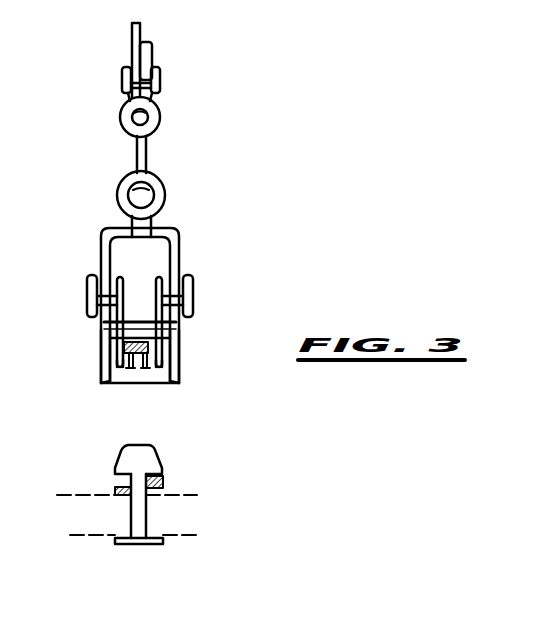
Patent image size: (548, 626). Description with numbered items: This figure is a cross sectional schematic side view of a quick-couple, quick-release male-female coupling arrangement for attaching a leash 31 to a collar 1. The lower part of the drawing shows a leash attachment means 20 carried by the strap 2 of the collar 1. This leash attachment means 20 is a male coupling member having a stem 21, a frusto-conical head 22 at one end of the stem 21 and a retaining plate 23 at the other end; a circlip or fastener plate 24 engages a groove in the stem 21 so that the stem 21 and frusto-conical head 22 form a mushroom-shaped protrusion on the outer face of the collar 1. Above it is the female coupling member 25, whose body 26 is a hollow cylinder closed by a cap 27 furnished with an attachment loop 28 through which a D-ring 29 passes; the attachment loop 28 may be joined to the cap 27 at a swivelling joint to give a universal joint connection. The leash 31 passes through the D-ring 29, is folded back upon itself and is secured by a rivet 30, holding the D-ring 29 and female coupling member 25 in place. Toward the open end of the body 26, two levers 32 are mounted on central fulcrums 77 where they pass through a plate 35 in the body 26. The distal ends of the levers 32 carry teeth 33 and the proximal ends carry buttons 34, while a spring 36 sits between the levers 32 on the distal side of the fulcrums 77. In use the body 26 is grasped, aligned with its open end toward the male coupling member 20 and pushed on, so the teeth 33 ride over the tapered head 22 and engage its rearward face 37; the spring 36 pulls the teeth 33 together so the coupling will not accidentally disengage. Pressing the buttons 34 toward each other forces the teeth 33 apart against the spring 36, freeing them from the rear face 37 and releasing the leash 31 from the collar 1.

The collar 1 is at (162, 513).
The strap 2 is at (178, 537).
The leash attachment means 20 is at (125, 513).
The stem 21 is at (130, 510).
The frusto-conical head 22 is at (138, 456).
The retaining plate 23 is at (117, 540).
The circlip or fastener plate 24 is at (115, 488).
The female coupling member 25 is at (151, 273).
The body 26 is at (105, 273).
The cap 27 is at (115, 228).
The attachment loop 28 is at (160, 188).
The D-ring 29 is at (145, 152).
The rivet 30 is at (150, 79).
The leash 31 is at (140, 34).
The levers 32 is at (100, 355).
The teeth 33 is at (119, 370).
The buttons 34 is at (87, 288).
The plate 35 is at (108, 331).
The spring 36 is at (146, 368).
The rearward face of the head 37 is at (166, 483).
The fulcrums 77 is at (104, 320).